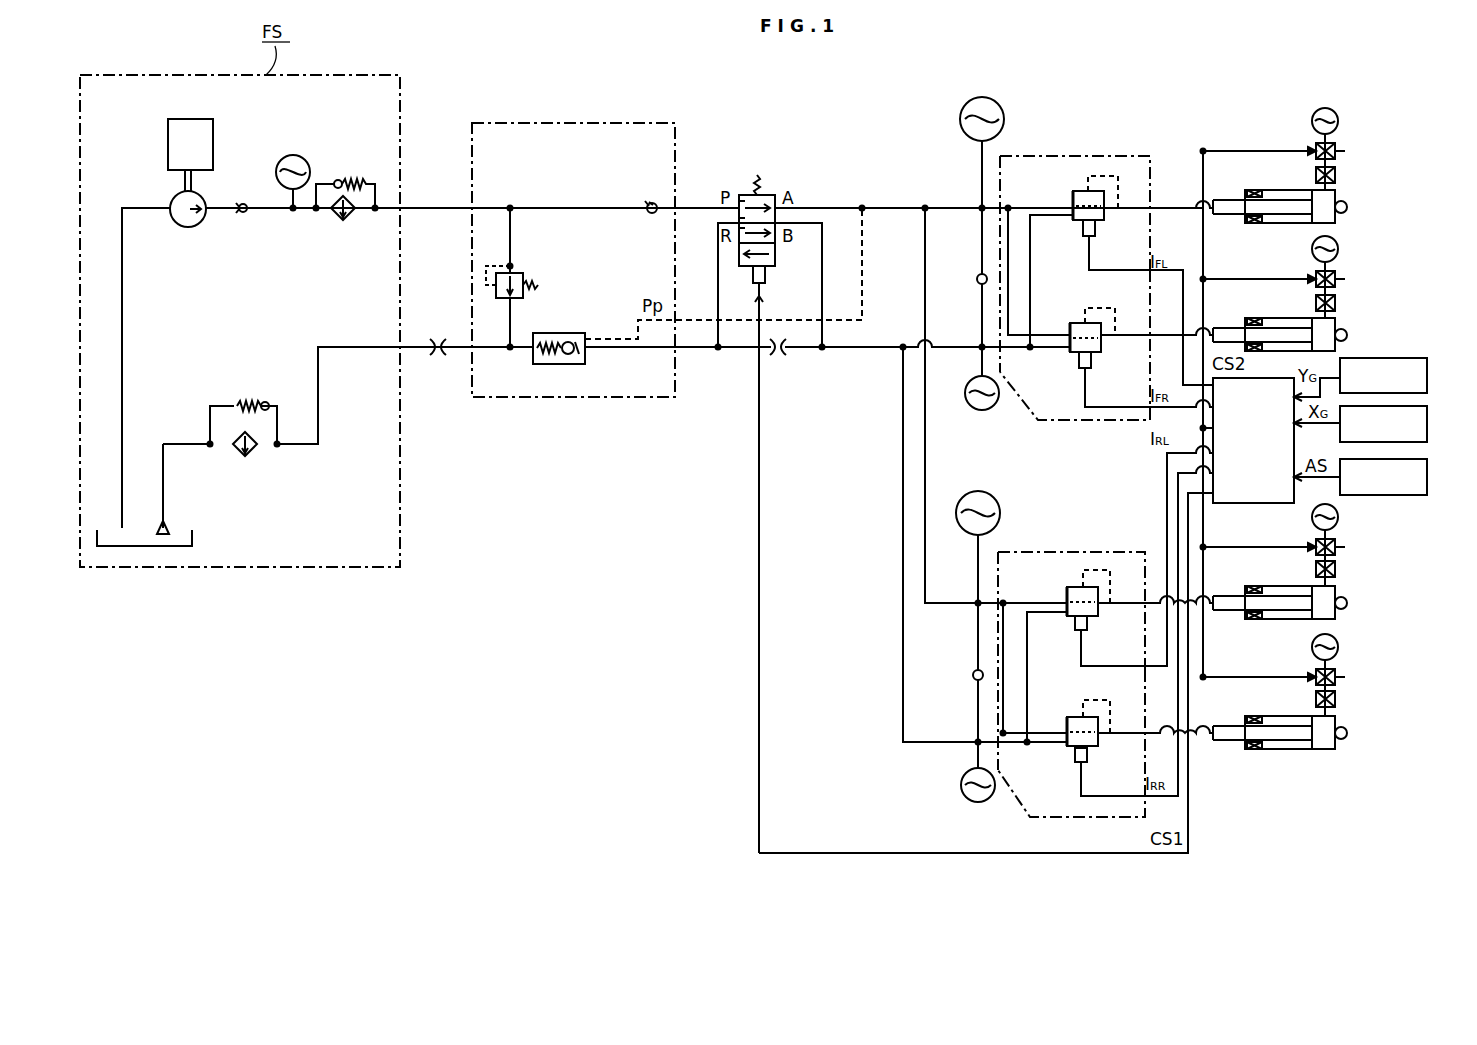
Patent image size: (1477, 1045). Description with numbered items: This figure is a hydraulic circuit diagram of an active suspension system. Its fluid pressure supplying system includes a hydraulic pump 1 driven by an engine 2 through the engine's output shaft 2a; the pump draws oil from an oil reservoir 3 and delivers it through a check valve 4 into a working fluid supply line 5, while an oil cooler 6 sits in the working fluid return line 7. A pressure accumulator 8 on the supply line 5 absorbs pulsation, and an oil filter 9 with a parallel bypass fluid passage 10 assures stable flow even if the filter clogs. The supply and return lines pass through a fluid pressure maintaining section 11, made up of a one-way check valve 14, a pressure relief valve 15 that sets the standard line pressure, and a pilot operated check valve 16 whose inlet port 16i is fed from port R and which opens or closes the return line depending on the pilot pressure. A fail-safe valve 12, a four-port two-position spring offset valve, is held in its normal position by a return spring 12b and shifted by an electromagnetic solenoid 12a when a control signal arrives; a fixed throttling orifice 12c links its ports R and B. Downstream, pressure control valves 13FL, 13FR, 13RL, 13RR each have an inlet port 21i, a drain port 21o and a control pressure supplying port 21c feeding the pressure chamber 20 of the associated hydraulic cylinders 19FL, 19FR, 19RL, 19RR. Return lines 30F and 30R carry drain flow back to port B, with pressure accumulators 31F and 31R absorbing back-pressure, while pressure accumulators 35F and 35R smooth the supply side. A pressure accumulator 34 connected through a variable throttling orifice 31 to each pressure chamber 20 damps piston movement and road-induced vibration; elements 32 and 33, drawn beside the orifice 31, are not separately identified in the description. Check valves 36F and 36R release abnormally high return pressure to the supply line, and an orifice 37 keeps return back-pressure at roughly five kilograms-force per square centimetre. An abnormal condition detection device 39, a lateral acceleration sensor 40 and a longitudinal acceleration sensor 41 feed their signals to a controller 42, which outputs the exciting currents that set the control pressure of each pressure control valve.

The hydraulic pump 1 is at (205, 200).
The engine 2 is at (190, 119).
The output shaft 2a is at (184, 185).
The oil reservoir 3 is at (192, 538).
The check valve 4 is at (245, 204).
The working fluid supply line 5 is at (265, 212).
The oil cooler 6 is at (245, 456).
The working fluid return line 7 is at (320, 396).
The pressure accumulator 8 is at (293, 155).
The oil filter 9 is at (338, 215).
The bypass fluid passage 10 is at (341, 180).
The fluid pressure maintaining section 11 is at (530, 123).
The fail-safe valve 12 is at (775, 252).
The electromagnetic solenoid 12a is at (766, 283).
The return spring 12b is at (760, 175).
The fixed throttling orifice 12c is at (781, 357).
The one-way check valve 14 is at (650, 215).
The pressure relief valve 15 is at (500, 298).
The pilot operated check valve 16 is at (560, 333).
The inlet port 16i is at (590, 341).
The pressure chamber 20 is at (1335, 191).
The inlet port 21i is at (1073, 208).
The drain port 21o is at (1075, 222).
The control pressure supplying port 21c is at (1105, 212).
The pressure control valve 13FL is at (1075, 264).
The pressure control valve 13FR is at (1075, 345).
The pressure control valve 13RL is at (1071, 661).
The pressure control valve 13RR is at (1071, 743).
The hydraulic cylinder 19FL is at (1332, 223).
The hydraulic cylinder 19FR is at (1344, 335).
The hydraulic cylinder 19RL is at (1332, 618).
The hydraulic cylinder 19RR is at (1332, 750).
The return line 30F is at (955, 346).
The return line 30R is at (940, 741).
The variable throttling orifice 31 is at (1398, 152).
The pressure accumulator 31F is at (992, 408).
The pressure accumulator 31R is at (972, 802).
The fixed orifice 32 is at (1336, 175).
The variable orifice valve 33 is at (1337, 146).
The pressure accumulator 34 is at (1336, 112).
The pressure accumulator 35F is at (998, 105).
The pressure accumulator 35R is at (996, 505).
The check valve 36F is at (978, 276).
The check valve 36R is at (974, 672).
The orifice 37 is at (438, 360).
The abnormal condition detection device 39 is at (1427, 468).
The lateral acceleration sensor 40 is at (1427, 366).
The longitudinal acceleration sensor 41 is at (1427, 416).
The controller 42 is at (1255, 503).